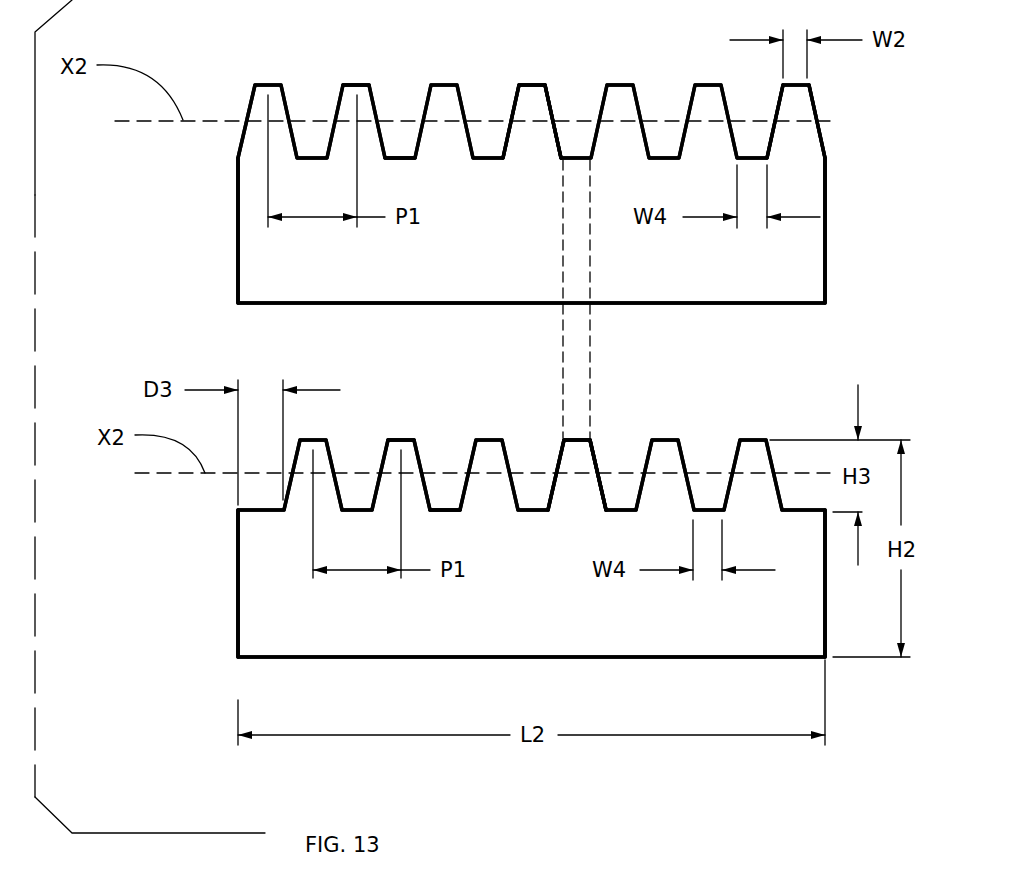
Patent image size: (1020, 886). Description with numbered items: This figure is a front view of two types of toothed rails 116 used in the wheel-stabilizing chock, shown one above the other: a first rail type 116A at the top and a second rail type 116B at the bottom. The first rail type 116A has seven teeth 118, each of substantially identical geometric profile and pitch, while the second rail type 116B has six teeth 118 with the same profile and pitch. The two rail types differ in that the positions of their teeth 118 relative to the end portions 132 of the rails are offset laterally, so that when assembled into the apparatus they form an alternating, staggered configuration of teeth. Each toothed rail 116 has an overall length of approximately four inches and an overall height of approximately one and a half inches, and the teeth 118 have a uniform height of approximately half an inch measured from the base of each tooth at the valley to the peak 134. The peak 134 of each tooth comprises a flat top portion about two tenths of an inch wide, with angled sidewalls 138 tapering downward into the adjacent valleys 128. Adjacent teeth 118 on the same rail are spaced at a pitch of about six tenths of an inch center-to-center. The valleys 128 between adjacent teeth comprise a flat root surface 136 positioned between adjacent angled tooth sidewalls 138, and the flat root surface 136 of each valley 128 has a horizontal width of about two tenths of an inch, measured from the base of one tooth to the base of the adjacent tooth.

The toothed rail 116 is at (222, 273).
The first rail type 116A is at (625, 303).
The second rail type 116B is at (617, 660).
The teeth 118 is at (532, 85).
The valleys 128 is at (585, 113).
The end portions 132 is at (238, 197).
The peak 134 is at (358, 85).
The flat root surface 136 is at (400, 158).
The angled sidewalls 138 is at (815, 113).